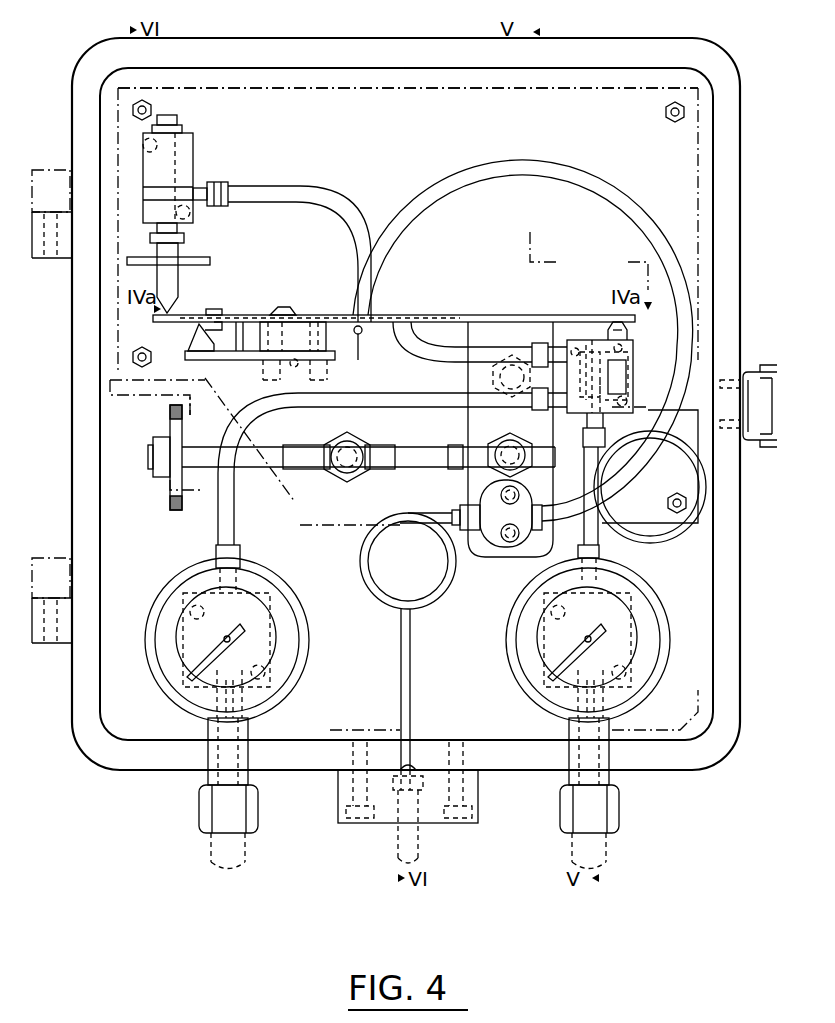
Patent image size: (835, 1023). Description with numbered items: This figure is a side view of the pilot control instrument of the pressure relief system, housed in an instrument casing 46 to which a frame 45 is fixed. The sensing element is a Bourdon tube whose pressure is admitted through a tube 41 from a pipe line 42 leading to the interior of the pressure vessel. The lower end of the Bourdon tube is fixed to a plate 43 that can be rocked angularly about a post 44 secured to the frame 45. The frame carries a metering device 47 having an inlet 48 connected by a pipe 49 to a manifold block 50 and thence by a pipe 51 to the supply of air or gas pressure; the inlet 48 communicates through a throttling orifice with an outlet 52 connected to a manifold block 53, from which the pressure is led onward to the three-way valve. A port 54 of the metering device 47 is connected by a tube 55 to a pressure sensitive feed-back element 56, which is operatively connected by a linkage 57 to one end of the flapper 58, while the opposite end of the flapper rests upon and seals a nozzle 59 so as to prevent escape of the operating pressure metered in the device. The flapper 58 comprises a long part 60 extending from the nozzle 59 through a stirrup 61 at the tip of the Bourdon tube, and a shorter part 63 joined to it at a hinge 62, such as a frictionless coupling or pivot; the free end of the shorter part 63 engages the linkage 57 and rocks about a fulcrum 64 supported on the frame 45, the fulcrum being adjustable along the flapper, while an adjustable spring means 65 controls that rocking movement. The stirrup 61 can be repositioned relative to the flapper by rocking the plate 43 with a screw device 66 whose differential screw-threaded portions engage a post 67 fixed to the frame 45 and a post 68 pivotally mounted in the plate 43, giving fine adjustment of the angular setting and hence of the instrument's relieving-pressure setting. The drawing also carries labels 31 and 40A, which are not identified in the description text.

The outlet fitting 31 is at (570, 855).
The hose 40A is at (565, 171).
The tube 41 is at (412, 671).
The pipe line 42 is at (391, 839).
The plate 43 is at (487, 559).
The post 44 is at (492, 377).
The frame 45 is at (623, 392).
The instrument casing 46 is at (480, 245).
The metering device 47 is at (635, 353).
The inlet 48 is at (558, 402).
The pipe 49 is at (221, 531).
The manifold block 50 is at (190, 598).
The pipe 51 is at (208, 855).
The outlet 52 is at (597, 421).
The manifold block 53 is at (636, 620).
The port 54 is at (588, 342).
The tube 55 is at (228, 190).
The feed-back element 56 is at (196, 262).
The linkage 57 is at (178, 291).
The flapper 58 is at (238, 313).
The nozzle 59 is at (623, 331).
The long part 60 is at (457, 315).
The stirrup 61 is at (348, 356).
The hinge 62 is at (268, 313).
The shorter part 63 is at (197, 316).
The fulcrum 64 is at (188, 337).
The spring means 65 is at (262, 373).
The screw device 66 is at (310, 473).
The post 67 is at (366, 446).
The post 68 is at (492, 449).